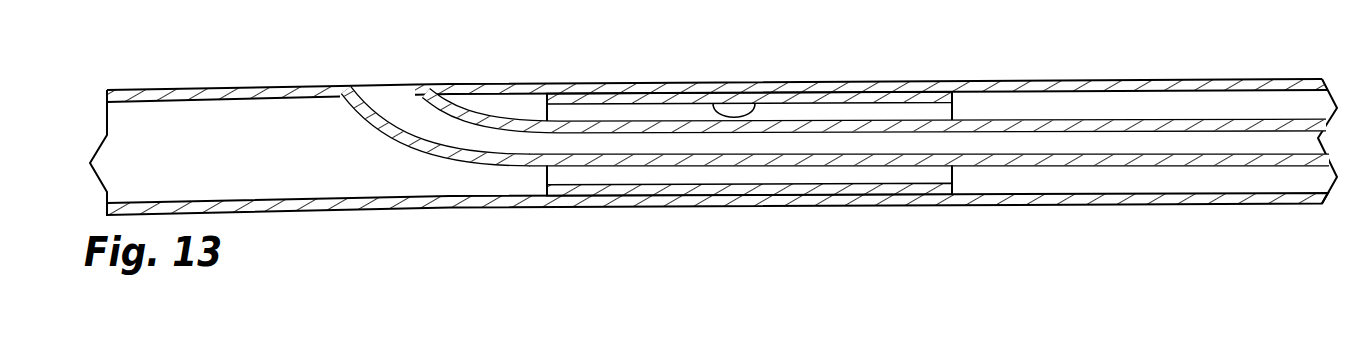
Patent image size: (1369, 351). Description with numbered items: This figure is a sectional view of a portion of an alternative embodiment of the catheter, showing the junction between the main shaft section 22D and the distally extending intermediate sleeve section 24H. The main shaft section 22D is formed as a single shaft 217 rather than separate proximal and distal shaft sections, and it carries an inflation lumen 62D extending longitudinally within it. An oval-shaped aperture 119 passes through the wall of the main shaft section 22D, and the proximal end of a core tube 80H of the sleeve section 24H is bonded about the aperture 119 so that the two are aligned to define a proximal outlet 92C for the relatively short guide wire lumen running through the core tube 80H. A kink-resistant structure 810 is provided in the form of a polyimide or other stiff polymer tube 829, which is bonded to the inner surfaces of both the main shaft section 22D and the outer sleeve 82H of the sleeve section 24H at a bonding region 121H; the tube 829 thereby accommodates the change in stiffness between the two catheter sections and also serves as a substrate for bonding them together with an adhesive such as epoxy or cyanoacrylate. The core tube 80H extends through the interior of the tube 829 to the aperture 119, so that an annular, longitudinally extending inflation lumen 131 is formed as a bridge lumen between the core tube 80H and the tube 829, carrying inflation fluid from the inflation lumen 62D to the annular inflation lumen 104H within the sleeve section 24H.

The main shaft section 22D is at (363, 217).
The inflation lumen 62D is at (274, 158).
The proximal outlet 92C is at (373, 79).
The aperture 119 is at (393, 92).
The single shaft 217 is at (483, 200).
The kink-resistant structure 810 is at (660, 84).
The bonding region 121H is at (755, 103).
The stiff polymer tube 829 is at (935, 113).
The annular inflation lumen 131 is at (826, 172).
The intermediate sleeve section 24H is at (1177, 48).
The outer sleeve 82H is at (1252, 83).
The core tube 80H is at (1140, 127).
The annular inflation lumen 104H is at (1133, 177).